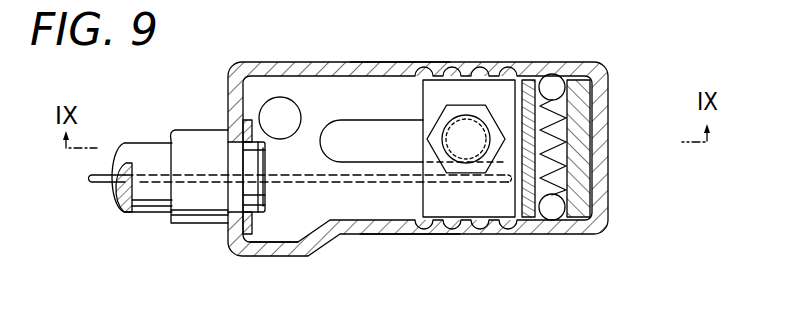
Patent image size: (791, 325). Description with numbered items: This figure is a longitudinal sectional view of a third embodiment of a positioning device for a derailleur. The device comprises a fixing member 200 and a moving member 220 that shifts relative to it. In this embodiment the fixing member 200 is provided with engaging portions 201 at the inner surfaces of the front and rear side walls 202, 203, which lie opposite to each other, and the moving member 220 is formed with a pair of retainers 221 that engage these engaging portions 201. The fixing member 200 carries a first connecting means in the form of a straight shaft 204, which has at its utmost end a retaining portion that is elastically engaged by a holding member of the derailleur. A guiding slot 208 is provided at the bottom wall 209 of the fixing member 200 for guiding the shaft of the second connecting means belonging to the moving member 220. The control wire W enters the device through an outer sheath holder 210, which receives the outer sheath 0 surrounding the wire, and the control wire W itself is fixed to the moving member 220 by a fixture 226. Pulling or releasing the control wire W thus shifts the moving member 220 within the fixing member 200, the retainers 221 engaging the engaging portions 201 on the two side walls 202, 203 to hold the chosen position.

The fixing member 200 is at (328, 62).
The engaging portions 201 is at (497, 75).
The front side wall 202 is at (392, 236).
The rear side wall 203 is at (373, 68).
The straight shaft 204 is at (275, 99).
The guiding slot 208 is at (362, 156).
The bottom wall 209 is at (285, 229).
The outer sheath holder 210 is at (200, 131).
The moving member 220 is at (582, 201).
The retainers 221 is at (563, 72).
The fixture 226 is at (478, 104).
The control wire W is at (104, 188).
The outer sheath 0 is at (148, 214).